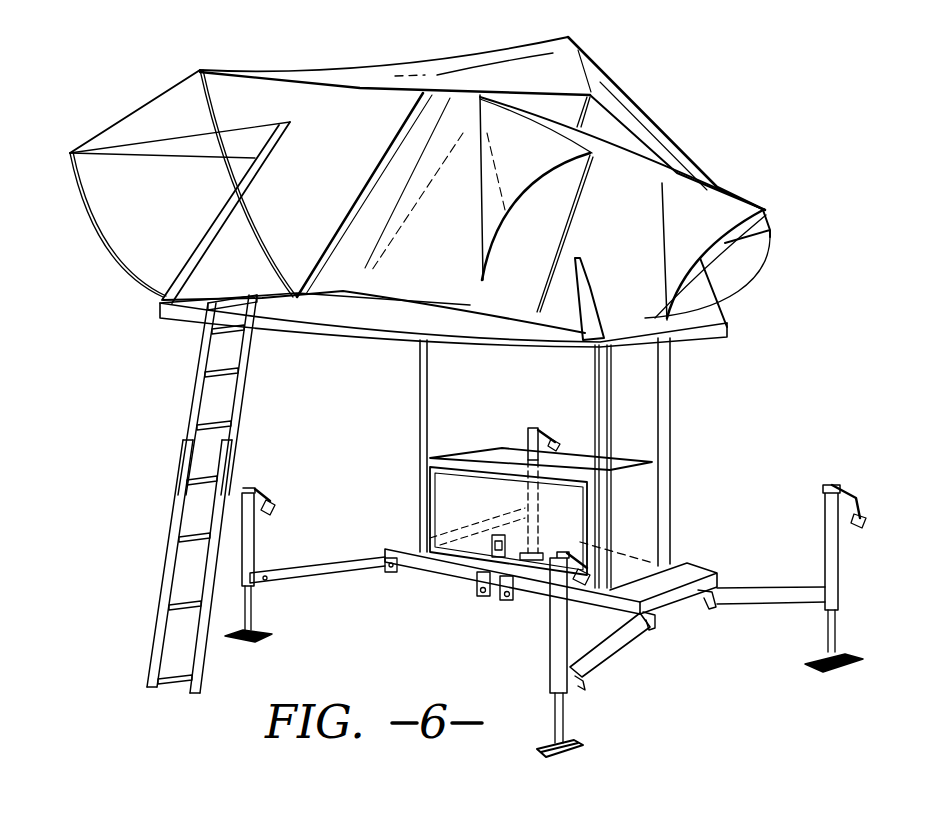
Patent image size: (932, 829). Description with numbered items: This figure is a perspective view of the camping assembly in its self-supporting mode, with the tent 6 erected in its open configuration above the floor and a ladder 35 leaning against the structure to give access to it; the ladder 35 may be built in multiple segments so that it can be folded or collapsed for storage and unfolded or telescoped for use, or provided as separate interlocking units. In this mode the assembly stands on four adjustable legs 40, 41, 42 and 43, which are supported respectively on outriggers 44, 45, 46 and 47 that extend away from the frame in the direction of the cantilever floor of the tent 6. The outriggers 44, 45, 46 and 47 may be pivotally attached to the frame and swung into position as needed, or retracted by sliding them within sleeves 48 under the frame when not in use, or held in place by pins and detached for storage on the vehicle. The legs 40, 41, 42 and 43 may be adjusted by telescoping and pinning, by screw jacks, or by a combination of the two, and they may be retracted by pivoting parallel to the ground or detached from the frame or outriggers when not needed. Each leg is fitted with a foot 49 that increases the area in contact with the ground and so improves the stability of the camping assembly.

The tent 6 is at (648, 125).
The ladder 35 is at (165, 557).
The adjustable leg 40 is at (253, 537).
The adjustable leg 41 is at (548, 668).
The adjustable leg 42 is at (825, 543).
The adjustable leg 43 is at (530, 430).
The outrigger 44 is at (313, 575).
The outrigger 45 is at (617, 651).
The outrigger 46 is at (772, 595).
The outrigger 47 is at (500, 512).
The sleeve 48 is at (387, 568).
The foot 49 is at (258, 642).